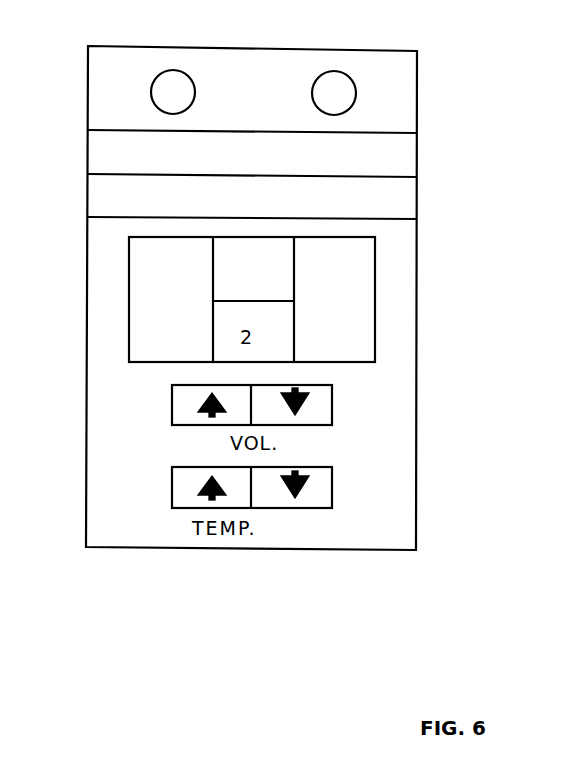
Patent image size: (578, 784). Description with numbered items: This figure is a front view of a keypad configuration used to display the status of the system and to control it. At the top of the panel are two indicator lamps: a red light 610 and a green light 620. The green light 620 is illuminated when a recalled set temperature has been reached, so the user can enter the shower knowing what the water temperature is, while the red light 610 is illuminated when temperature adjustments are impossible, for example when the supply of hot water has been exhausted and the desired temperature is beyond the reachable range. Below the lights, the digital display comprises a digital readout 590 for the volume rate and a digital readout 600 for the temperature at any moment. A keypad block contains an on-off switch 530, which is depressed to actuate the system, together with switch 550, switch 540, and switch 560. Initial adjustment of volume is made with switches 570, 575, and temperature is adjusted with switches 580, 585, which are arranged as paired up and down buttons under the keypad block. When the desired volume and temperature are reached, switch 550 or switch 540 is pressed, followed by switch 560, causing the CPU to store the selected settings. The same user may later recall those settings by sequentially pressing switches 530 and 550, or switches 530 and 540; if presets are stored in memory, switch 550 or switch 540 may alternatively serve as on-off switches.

The on-off switch 530 is at (141, 262).
The switch 540 is at (230, 342).
The switch 550 is at (270, 273).
The switch 560 is at (345, 325).
The switch 570 is at (324, 409).
The switch 575 is at (182, 401).
The switch 580 is at (166, 487).
The switch 585 is at (324, 492).
The digital readout 590 is at (88, 156).
The digital readout 600 is at (88, 196).
The red light 610 is at (176, 70).
The green light 620 is at (333, 71).